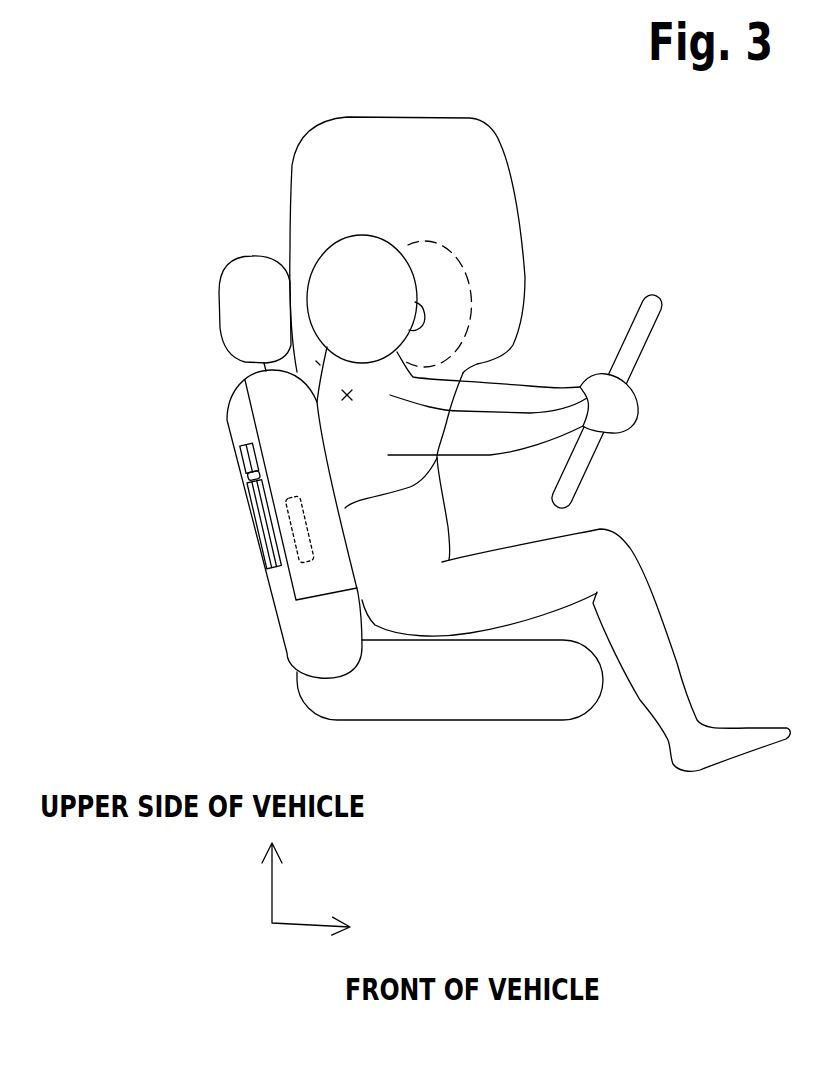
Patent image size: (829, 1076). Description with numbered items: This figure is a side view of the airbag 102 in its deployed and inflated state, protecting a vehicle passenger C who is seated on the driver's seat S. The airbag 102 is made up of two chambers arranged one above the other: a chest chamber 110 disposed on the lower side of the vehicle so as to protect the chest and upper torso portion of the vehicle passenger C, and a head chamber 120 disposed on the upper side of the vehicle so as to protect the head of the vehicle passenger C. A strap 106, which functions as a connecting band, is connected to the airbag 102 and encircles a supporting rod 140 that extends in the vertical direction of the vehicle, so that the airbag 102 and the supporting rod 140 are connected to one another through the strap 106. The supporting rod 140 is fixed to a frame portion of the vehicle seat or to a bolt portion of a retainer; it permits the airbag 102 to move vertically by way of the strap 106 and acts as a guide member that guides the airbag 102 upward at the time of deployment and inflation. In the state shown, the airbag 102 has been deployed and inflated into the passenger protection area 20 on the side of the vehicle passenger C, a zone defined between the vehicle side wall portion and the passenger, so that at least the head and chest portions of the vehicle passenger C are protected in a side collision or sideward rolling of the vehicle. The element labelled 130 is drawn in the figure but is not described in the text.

The airbag 102 is at (362, 133).
The head chamber 120 is at (526, 239).
The vehicle passenger C is at (310, 355).
The passenger protection area 20 is at (340, 394).
The strap 106 is at (248, 481).
The supporting rod 140 is at (264, 512).
The inflator 130 is at (290, 524).
The chest chamber 110 is at (430, 486).
The driver's seat S is at (415, 734).